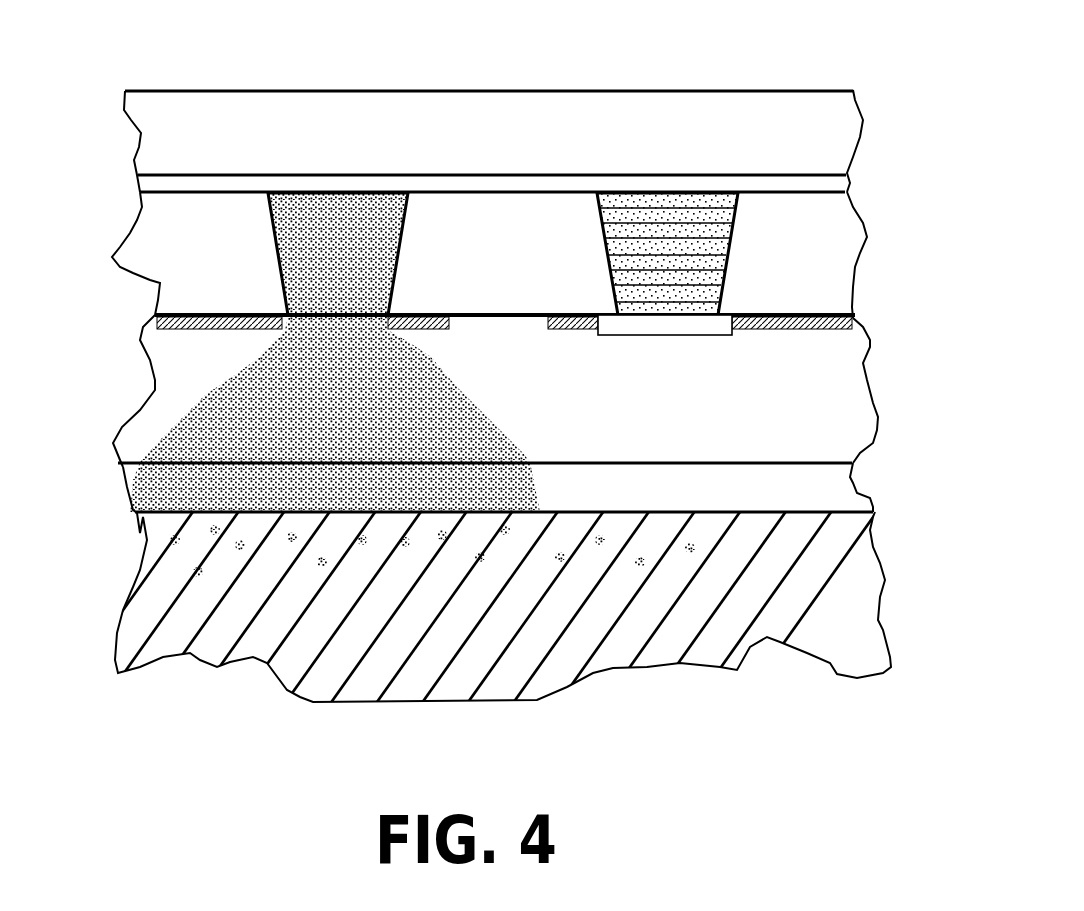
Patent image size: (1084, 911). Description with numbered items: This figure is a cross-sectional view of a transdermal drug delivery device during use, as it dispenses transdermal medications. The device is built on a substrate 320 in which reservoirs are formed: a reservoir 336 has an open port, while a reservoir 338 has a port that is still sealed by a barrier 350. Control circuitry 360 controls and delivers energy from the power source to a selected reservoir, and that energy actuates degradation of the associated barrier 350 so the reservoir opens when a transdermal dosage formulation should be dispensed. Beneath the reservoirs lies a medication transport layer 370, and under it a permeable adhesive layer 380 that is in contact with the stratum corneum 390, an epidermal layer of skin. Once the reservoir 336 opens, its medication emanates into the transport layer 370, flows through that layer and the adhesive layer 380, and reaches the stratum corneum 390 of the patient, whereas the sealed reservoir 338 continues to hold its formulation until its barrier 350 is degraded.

The substrate 320 is at (222, 253).
The reservoir with an open port 336 is at (328, 237).
The reservoir with a sealed port 338 is at (673, 245).
The barrier 350 is at (693, 323).
The control circuitry 360 is at (773, 322).
The medication transport layer 370 is at (773, 418).
The permeable adhesive layer 380 is at (765, 482).
The stratum corneum 390 is at (772, 568).